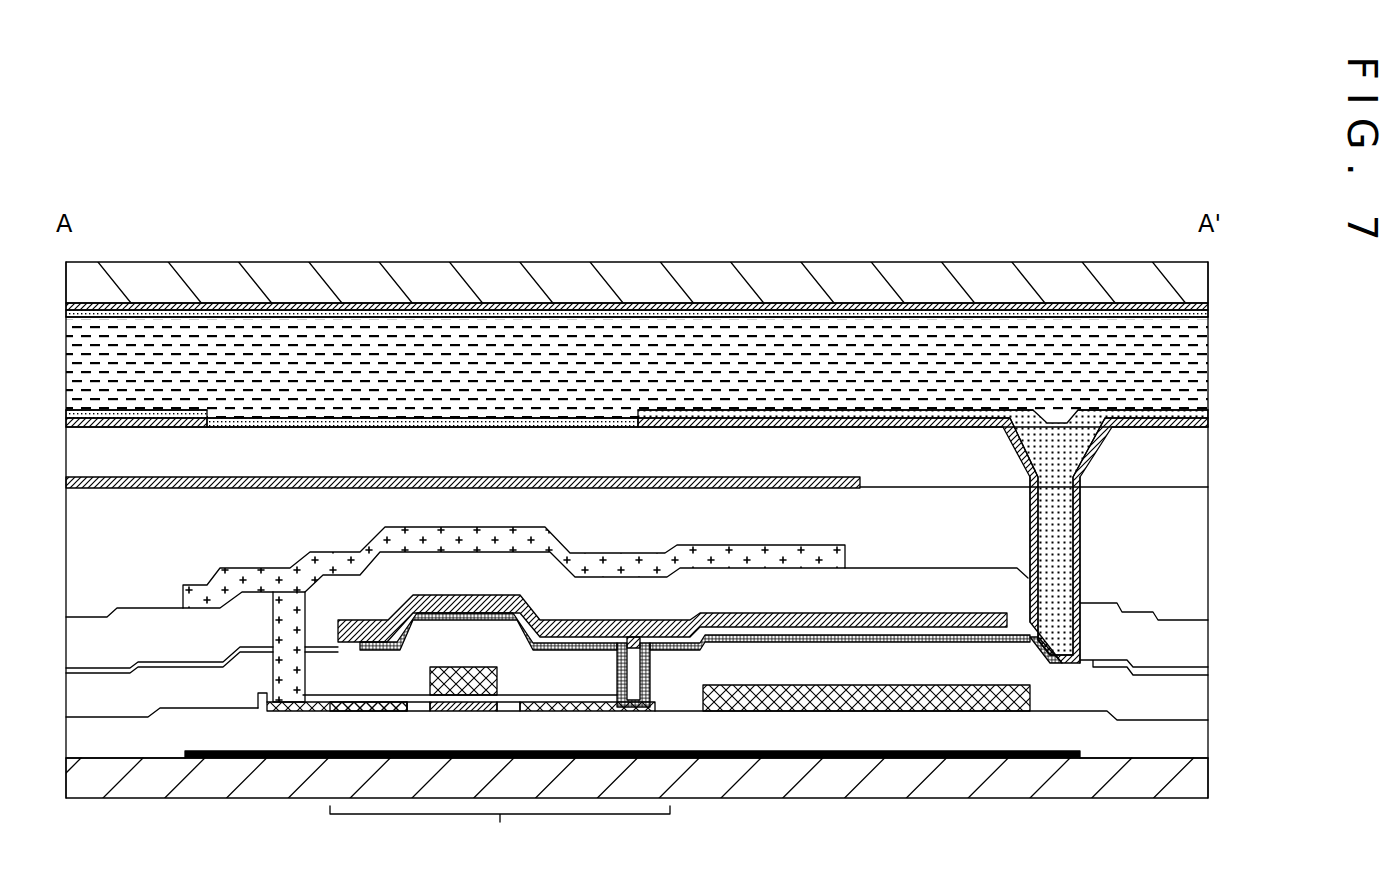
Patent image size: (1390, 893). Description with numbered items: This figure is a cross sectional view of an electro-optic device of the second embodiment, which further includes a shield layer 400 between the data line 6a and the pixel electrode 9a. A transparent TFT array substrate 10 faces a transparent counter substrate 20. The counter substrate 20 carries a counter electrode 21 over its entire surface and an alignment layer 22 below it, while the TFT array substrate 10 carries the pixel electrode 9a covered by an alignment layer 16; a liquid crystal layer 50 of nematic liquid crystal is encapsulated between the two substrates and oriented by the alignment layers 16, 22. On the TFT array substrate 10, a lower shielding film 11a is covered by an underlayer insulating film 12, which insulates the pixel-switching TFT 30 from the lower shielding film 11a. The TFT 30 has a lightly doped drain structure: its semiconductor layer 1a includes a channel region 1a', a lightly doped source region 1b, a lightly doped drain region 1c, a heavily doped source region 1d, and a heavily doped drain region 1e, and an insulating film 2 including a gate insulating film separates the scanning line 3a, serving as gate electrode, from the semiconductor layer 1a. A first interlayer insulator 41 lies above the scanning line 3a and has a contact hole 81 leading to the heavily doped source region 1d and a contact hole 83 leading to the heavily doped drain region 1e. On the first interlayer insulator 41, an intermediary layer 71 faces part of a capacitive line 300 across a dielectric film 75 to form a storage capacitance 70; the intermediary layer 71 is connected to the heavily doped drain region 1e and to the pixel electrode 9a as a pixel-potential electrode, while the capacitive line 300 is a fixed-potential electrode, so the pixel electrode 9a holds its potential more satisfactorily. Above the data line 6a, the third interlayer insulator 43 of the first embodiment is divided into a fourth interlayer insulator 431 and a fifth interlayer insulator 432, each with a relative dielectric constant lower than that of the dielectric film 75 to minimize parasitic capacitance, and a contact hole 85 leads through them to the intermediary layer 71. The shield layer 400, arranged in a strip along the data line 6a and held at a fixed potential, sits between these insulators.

The counter substrate 20 is at (1208, 285).
The counter electrode 21 is at (1208, 307).
The alignment layer 22 is at (1208, 318).
The liquid crystal layer 50 is at (1208, 375).
The alignment layer 16 is at (1208, 412).
The pixel electrode 9a is at (1208, 426).
The shield layer 400 is at (845, 484).
The fifth interlayer insulator 432 is at (1197, 466).
The fourth interlayer insulator 431 is at (1197, 545).
The third interlayer insulator 43 is at (701, 493).
The data line 6a is at (604, 553).
The contact hole 81 is at (273, 620).
The dielectric film 75 is at (1208, 675).
The storage capacitance 70 is at (692, 628).
The capacitive line 300 is at (790, 612).
The intermediary layer 71 is at (760, 645).
The contact hole 83 is at (648, 674).
The contact hole 85 is at (1078, 580).
The scanning line 3a is at (465, 667).
The insulating film 2 is at (259, 705).
The first interlayer insulator 41 is at (1208, 703).
The semiconductor layer 1a is at (337, 724).
The heavily doped source region 1d is at (362, 711).
The lightly doped source region 1b is at (418, 711).
The channel region 1a' is at (472, 724).
The lightly doped drain region 1c is at (510, 711).
The heavily doped drain region 1e is at (608, 711).
The lower shielding film 11a is at (1030, 751).
The underlayer insulating film 12 is at (1208, 741).
The TFT array substrate 10 is at (1208, 782).
The TFT 30 is at (500, 831).